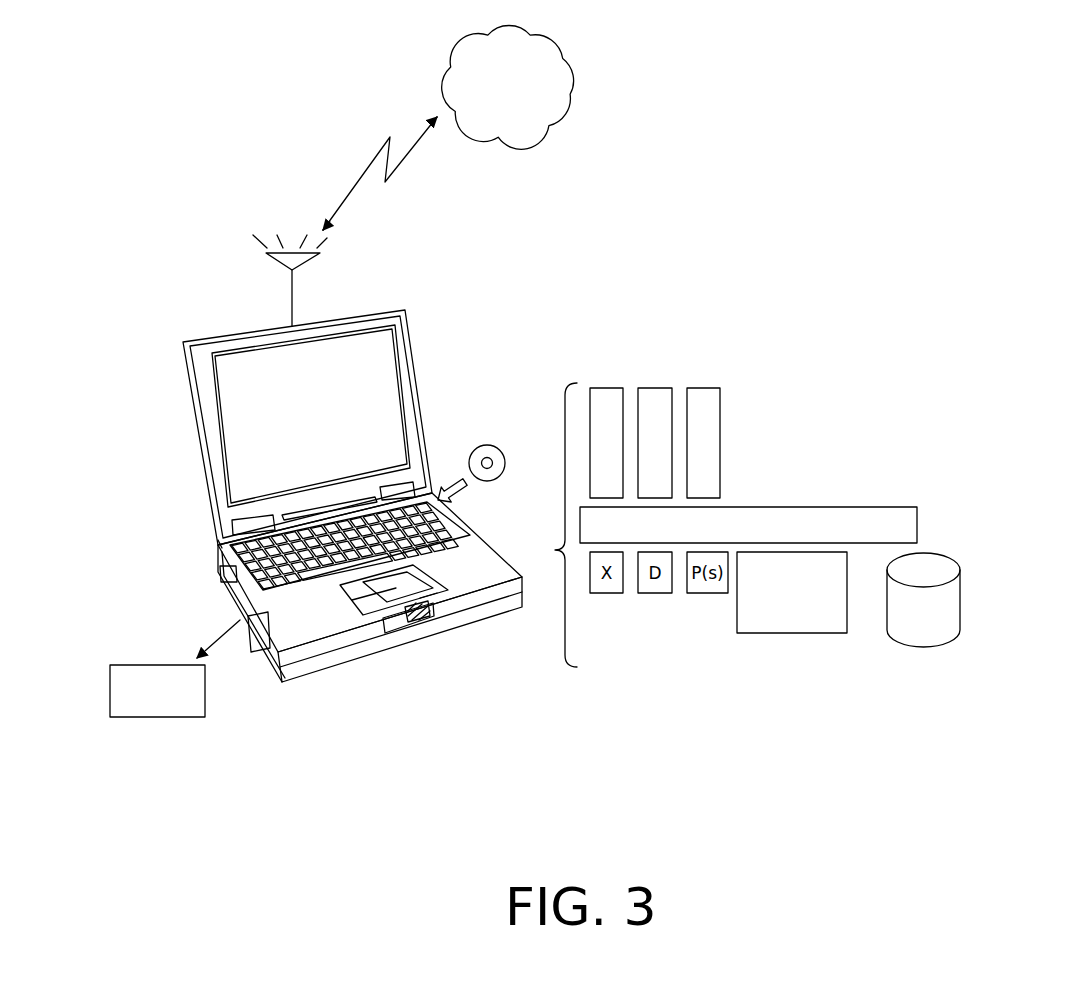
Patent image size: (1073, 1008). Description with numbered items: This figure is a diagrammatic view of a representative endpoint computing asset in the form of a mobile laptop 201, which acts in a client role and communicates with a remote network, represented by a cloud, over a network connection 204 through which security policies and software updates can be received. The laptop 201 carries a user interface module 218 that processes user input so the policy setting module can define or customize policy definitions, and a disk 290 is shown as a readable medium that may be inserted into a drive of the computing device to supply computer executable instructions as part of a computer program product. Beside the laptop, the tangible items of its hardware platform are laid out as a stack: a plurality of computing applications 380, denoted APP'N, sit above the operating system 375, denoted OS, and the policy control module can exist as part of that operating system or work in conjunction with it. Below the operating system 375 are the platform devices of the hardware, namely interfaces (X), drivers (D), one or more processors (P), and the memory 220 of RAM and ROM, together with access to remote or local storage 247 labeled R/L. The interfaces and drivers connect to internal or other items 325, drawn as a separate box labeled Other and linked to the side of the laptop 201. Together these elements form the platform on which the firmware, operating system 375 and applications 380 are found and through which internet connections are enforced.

The laptop 201 is at (213, 335).
The network connection 204 is at (561, 41).
The user interface module 218 is at (203, 538).
The memory 220 is at (783, 634).
The remote or local storage 247 is at (935, 648).
The disk 290 is at (507, 447).
The internal or other items 325 is at (178, 718).
The operating system 375 is at (918, 520).
The computing applications 380 is at (847, 390).